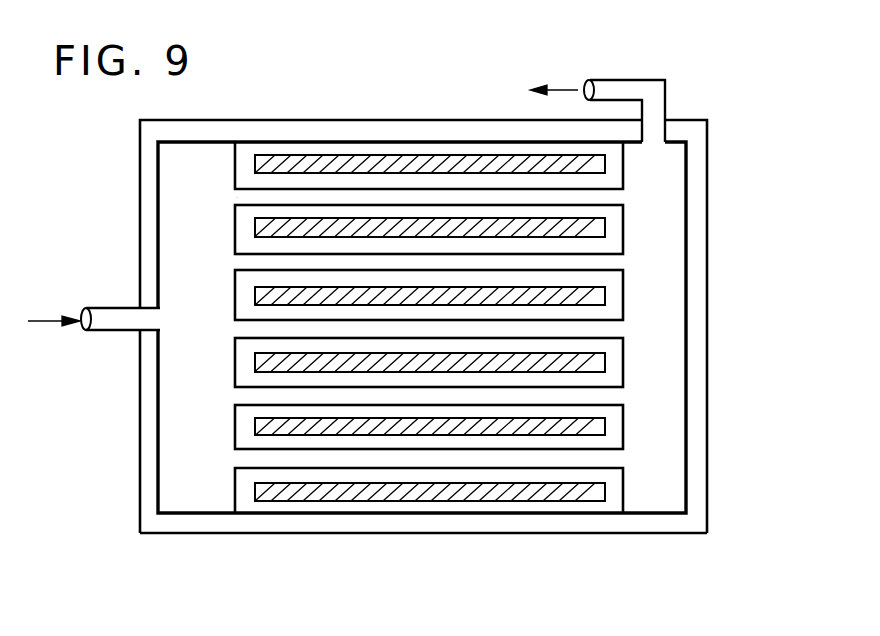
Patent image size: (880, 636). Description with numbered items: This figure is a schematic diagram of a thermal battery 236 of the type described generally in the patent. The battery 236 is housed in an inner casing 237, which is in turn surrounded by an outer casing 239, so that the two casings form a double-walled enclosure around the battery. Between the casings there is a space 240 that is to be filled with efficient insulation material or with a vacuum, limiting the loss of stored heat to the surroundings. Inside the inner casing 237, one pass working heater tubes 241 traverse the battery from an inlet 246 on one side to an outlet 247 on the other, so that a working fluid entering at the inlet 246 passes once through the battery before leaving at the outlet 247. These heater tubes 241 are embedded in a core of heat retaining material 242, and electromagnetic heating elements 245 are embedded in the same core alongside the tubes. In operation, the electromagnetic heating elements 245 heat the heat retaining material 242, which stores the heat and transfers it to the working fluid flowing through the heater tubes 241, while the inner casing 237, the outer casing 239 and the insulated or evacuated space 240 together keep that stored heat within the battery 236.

The thermal battery 236 is at (715, 382).
The inner casing 237 is at (425, 515).
The outer casing 239 is at (618, 534).
The space 240 is at (310, 525).
The one pass working heater tubes 241 is at (232, 262).
The heat retaining material 242 is at (625, 158).
The electromagnetic heating elements 245 is at (598, 232).
The inlet 246 is at (118, 318).
The outlet 247 is at (618, 80).